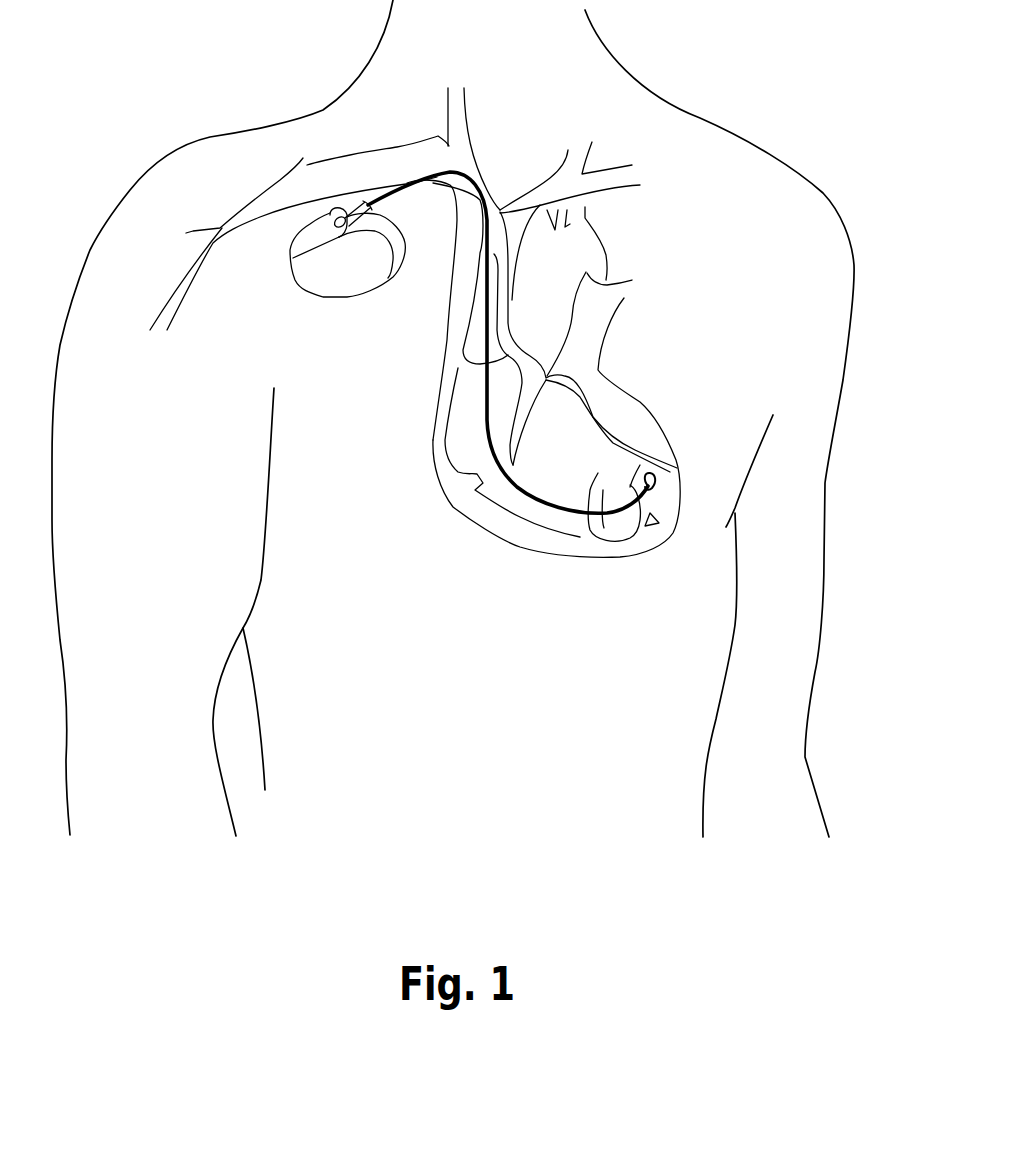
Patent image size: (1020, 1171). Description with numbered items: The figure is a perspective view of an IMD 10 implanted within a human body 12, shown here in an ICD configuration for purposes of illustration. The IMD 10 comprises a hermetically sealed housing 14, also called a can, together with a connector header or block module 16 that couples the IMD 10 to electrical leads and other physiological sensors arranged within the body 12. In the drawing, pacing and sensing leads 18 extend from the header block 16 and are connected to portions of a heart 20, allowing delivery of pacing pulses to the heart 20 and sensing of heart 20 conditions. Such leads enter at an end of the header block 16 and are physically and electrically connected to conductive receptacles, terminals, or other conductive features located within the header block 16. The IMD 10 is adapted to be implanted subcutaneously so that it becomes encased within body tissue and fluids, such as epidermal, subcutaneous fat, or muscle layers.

The IMD 10 is at (311, 257).
The human body 12 is at (712, 80).
The hermetically sealed housing 14 is at (358, 272).
The connector header 16 is at (317, 233).
The pacing and sensing leads 18 is at (484, 309).
The heart 20 is at (556, 556).